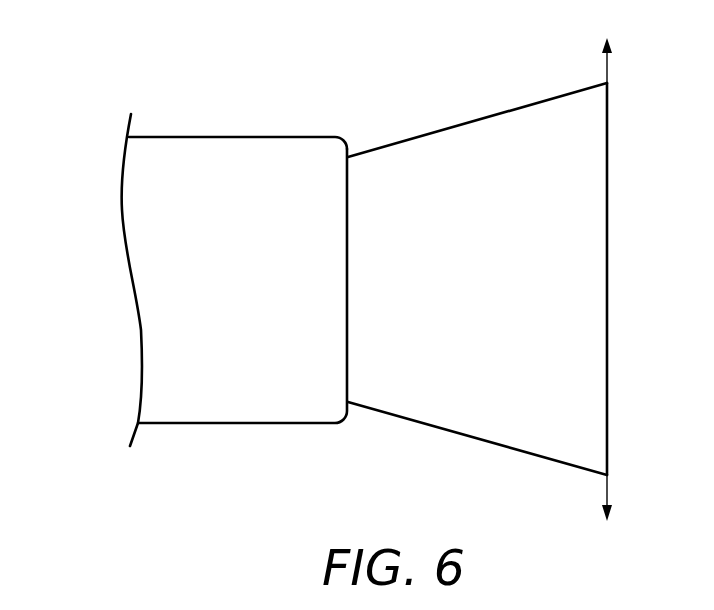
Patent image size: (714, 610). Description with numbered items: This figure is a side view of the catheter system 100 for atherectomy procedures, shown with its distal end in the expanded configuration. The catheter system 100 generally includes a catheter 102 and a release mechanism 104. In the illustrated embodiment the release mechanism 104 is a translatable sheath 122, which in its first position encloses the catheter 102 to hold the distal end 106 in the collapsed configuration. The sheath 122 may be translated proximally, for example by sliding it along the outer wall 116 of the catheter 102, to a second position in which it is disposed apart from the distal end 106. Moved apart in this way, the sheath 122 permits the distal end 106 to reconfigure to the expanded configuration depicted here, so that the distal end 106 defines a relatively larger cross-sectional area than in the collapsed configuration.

The catheter system 100 is at (118, 66).
The catheter 102 is at (425, 134).
The release mechanism 104 is at (164, 137).
The distal end 106 is at (527, 106).
The outer wall 116 is at (476, 439).
The sheath 122 is at (280, 137).